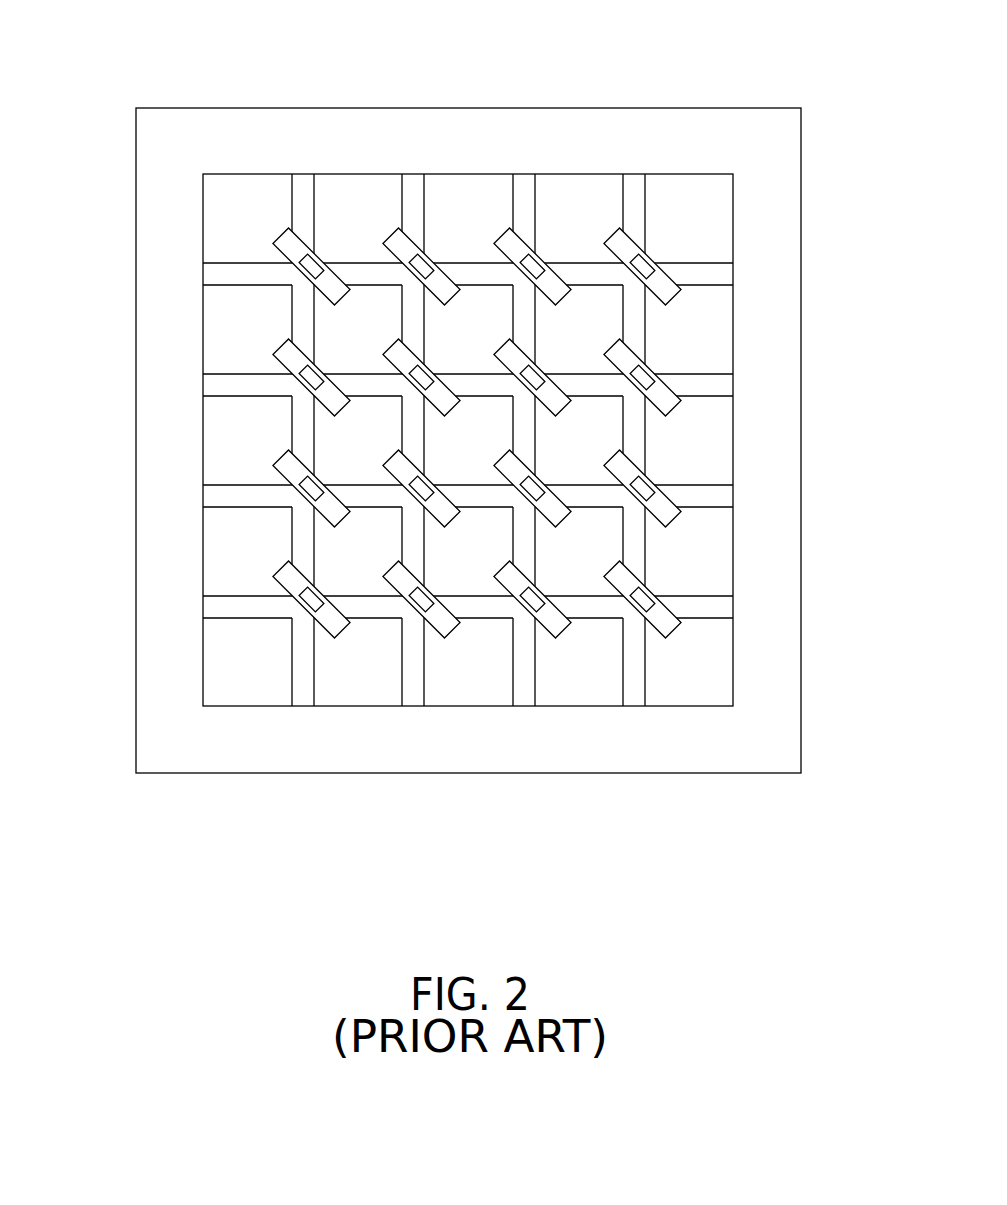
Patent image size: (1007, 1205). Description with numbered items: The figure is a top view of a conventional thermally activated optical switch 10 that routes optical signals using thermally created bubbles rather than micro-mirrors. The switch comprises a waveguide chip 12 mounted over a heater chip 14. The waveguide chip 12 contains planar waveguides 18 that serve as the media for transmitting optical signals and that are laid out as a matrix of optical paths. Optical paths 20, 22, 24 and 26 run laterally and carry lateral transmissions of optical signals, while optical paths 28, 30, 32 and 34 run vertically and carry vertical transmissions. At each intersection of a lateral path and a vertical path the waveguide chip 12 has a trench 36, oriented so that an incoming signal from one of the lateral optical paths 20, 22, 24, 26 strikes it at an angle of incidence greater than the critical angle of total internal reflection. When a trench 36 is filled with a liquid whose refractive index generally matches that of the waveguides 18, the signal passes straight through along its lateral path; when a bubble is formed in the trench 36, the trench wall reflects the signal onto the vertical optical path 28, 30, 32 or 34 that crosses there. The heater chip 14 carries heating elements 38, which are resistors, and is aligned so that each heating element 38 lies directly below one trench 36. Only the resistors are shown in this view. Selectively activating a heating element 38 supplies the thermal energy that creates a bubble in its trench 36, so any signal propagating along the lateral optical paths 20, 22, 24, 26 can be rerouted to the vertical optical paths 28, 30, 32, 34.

The thermally activated optical switch 10 is at (683, 32).
The waveguide chip 12 is at (203, 212).
The heater chip 14 is at (228, 118).
The planar waveguides 18 is at (635, 555).
The optical path 20 is at (158, 273).
The optical path 22 is at (158, 385).
The optical path 24 is at (158, 496).
The optical path 26 is at (158, 606).
The optical path 28 is at (302, 757).
The optical path 30 is at (413, 757).
The optical path 32 is at (523, 757).
The optical path 34 is at (633, 757).
The trench 36 is at (280, 241).
The heating element 38 is at (323, 260).